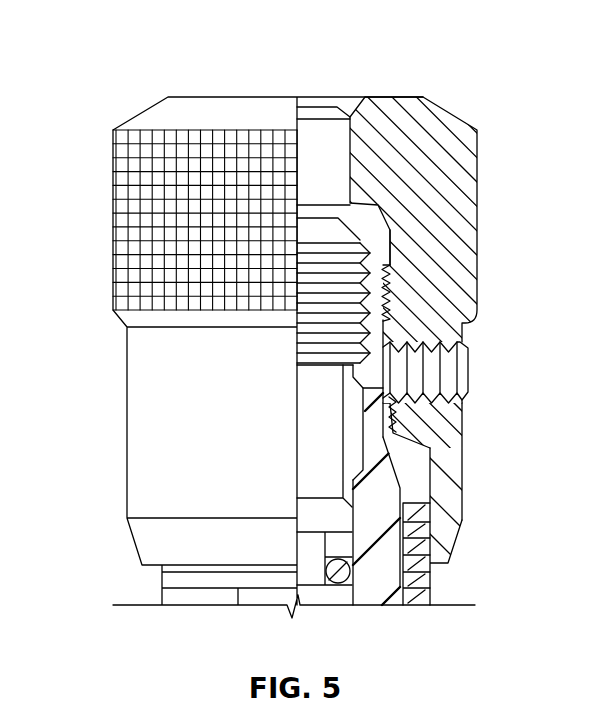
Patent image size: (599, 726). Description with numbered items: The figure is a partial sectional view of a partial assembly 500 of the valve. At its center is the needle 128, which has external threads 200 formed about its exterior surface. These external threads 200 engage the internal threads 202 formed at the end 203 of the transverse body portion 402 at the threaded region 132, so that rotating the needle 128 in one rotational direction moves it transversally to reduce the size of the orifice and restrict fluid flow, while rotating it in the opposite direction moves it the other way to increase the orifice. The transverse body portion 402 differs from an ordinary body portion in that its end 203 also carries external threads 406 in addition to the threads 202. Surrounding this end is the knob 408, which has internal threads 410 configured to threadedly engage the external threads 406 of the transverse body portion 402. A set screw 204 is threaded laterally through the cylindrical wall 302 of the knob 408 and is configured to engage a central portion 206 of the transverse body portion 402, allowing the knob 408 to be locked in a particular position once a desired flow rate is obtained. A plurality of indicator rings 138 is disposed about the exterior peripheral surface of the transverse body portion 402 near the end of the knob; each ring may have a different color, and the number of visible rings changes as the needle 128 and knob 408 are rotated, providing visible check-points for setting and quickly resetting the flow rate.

The partial assembly 500 is at (185, 58).
The needle 128 is at (319, 97).
The knob 408 is at (401, 97).
The external threads 200 is at (371, 236).
The internal threads 202 is at (359, 308).
The end 203 is at (380, 272).
The external threads 406 is at (394, 295).
The threaded region 132 is at (371, 318).
The set screw 204 is at (464, 364).
The internal threads 410 is at (398, 417).
The transverse body portion 402 is at (361, 420).
The central portion 206 is at (373, 440).
The cylindrical wall 302 is at (450, 473).
The indicator rings 138 is at (423, 581).